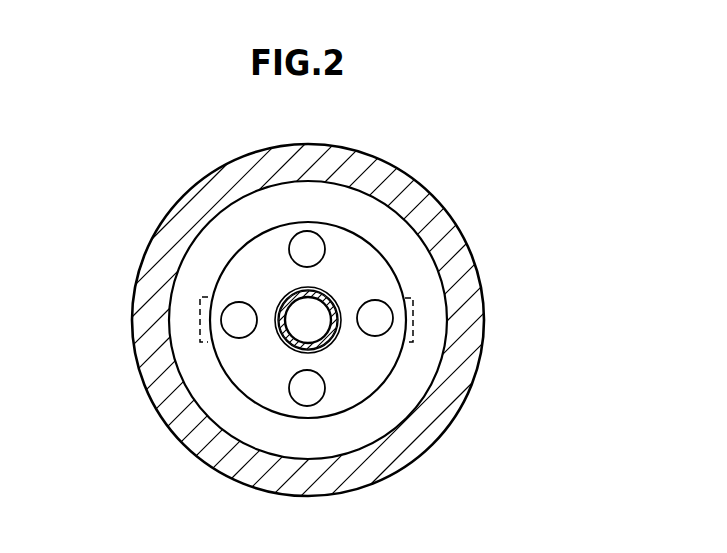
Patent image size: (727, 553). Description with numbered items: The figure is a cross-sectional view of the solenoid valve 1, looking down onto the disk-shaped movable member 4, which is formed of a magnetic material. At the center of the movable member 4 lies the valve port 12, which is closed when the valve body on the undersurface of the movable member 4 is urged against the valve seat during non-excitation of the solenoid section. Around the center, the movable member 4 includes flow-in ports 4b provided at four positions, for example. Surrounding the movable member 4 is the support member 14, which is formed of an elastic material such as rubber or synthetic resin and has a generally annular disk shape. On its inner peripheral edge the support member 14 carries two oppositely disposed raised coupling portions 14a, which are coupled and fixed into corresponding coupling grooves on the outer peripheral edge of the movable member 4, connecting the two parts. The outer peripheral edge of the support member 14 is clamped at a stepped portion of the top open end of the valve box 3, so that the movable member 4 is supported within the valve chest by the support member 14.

The solenoid valve 1 is at (468, 192).
The valve box 3 is at (468, 358).
The movable member 4 is at (377, 368).
The flow-in ports 4b is at (377, 313).
The valve port 12 is at (298, 323).
The support member 14 is at (193, 365).
The raised coupling portions 14a is at (198, 319).